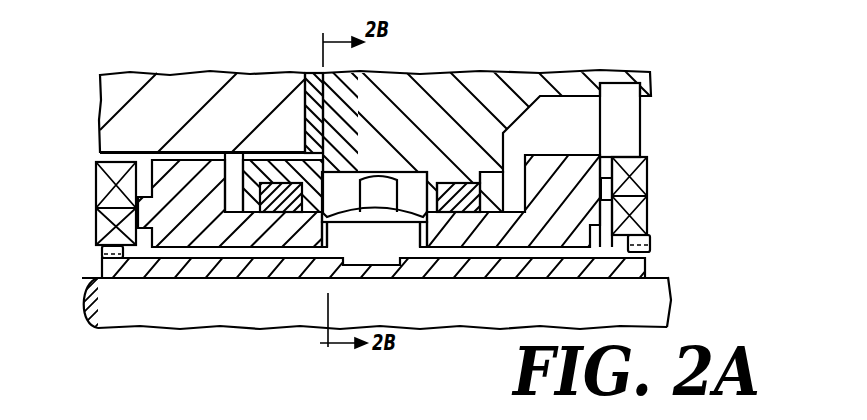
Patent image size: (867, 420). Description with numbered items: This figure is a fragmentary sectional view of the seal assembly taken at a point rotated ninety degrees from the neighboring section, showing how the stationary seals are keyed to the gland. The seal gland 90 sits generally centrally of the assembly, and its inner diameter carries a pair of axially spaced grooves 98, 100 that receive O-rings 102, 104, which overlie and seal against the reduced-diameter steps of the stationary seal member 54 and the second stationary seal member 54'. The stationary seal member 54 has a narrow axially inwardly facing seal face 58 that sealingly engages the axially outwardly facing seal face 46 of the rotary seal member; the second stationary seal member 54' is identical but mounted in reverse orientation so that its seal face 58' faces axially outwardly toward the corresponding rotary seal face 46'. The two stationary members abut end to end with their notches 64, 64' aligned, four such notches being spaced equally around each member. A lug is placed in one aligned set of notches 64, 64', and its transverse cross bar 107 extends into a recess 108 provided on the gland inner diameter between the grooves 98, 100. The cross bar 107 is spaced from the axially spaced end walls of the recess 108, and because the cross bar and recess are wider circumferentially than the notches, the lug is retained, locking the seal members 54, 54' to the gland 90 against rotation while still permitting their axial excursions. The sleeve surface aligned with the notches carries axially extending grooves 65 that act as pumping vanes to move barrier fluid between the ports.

The seal face 46 is at (211, 156).
The seal face 46' is at (642, 165).
The stationary seal member 54 is at (249, 233).
The second stationary seal member 54' is at (513, 230).
The seal face 58 is at (99, 203).
The seal face 58' is at (653, 196).
The notches 64 is at (306, 262).
The notches 64' is at (415, 262).
The axially extending grooves 65 is at (384, 250).
The seal gland 90 is at (514, 90).
The groove 98 is at (262, 183).
The groove 100 is at (478, 215).
The O-ring 102 is at (275, 213).
The O-ring 104 is at (449, 212).
The cross bar 107 is at (382, 182).
The recess 108 is at (346, 182).